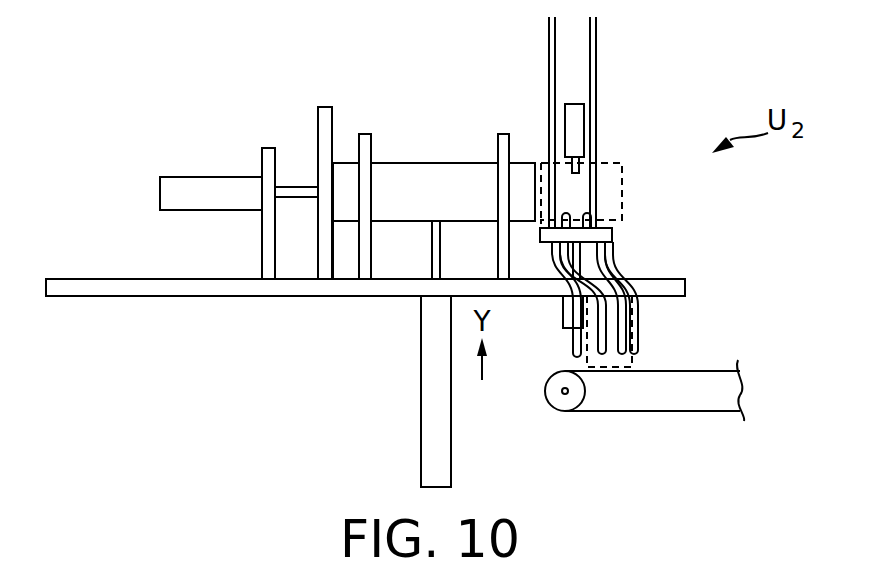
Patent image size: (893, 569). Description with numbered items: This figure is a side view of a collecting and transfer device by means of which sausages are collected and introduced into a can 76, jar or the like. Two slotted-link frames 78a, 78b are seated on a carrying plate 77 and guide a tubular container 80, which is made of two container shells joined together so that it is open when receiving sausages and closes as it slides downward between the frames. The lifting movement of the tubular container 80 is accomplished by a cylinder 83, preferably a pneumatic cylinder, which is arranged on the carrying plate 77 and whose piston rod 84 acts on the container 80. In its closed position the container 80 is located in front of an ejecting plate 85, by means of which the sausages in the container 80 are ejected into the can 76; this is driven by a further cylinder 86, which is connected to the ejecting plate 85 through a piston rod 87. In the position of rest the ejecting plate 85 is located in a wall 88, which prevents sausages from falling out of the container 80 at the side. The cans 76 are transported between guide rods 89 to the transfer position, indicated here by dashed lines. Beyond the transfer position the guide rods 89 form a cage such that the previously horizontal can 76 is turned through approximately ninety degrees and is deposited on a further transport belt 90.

The can 76 is at (620, 152).
The carrying plate 77 is at (302, 290).
The slotted-link frame 78a is at (363, 140).
The slotted-link frame 78b is at (502, 140).
The tubular container 80 is at (435, 182).
The cylinder 83 is at (432, 373).
The piston rod 84 is at (433, 247).
The ejecting plate 85 is at (325, 205).
The further cylinder 86 is at (210, 193).
The piston rod 87 is at (302, 193).
The wall 88 is at (325, 272).
The guide rods 89 is at (597, 62).
The transport belt 90 is at (683, 380).